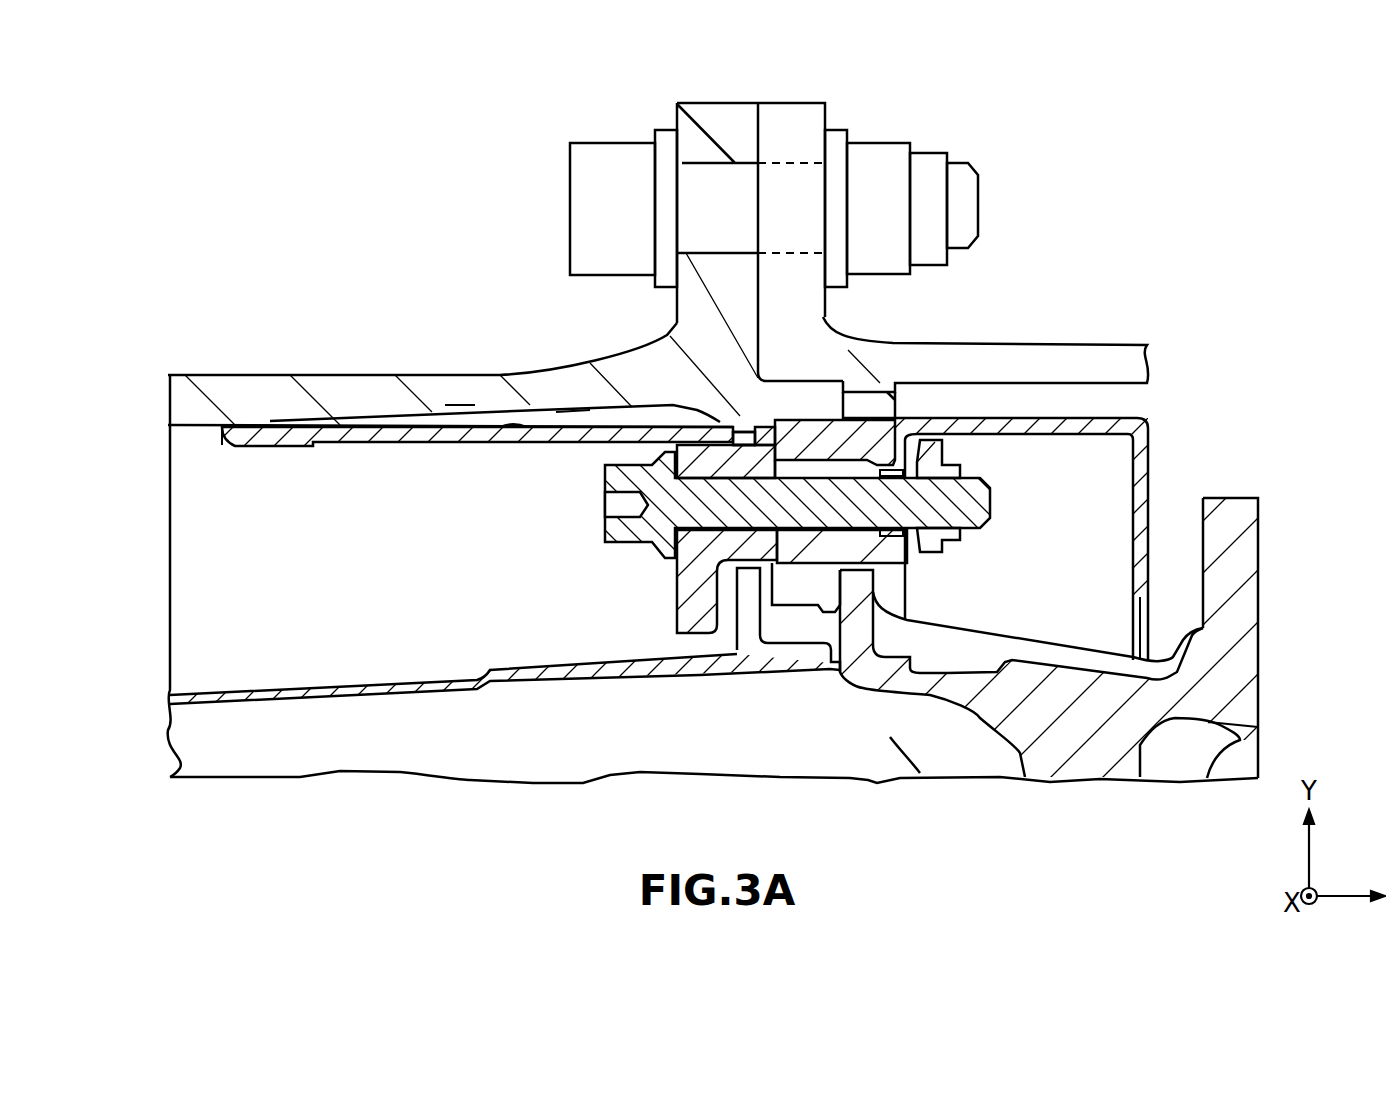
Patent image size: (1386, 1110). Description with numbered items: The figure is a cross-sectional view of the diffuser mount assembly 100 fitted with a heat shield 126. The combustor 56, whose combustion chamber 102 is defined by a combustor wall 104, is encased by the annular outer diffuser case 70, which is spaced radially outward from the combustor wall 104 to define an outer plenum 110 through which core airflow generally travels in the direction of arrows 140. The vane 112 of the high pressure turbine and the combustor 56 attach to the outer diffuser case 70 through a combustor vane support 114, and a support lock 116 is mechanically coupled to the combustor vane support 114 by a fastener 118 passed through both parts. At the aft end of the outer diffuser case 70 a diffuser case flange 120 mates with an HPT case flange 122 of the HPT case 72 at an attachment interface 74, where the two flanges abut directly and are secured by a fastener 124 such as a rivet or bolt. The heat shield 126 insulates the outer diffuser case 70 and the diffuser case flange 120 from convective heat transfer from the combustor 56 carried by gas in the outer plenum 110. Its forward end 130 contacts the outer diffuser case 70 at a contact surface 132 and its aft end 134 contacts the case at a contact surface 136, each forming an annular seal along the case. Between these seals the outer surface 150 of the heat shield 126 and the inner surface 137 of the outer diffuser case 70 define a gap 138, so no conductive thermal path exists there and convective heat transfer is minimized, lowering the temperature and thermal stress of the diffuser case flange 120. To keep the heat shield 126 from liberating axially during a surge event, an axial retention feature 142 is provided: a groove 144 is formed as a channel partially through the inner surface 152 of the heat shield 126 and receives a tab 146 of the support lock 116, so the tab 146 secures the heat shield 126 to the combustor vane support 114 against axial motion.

The diffuser mount assembly 100 is at (255, 182).
The combustion chamber 102 is at (745, 766).
The combustor wall 104 is at (145, 722).
The outer plenum 110 is at (300, 576).
The vane 112 is at (1100, 763).
The combustor vane support 114 is at (1140, 470).
The support lock 116 is at (690, 605).
The fastener 118 is at (985, 505).
The diffuser case flange 120 is at (698, 125).
The HPT case flange 122 is at (802, 118).
The fastener 124 is at (568, 165).
The heat shield 126 is at (345, 435).
The forward end 130 is at (225, 432).
The contact surface 132 is at (270, 421).
The aft end 134 is at (778, 420).
The contact surface 136 is at (790, 422).
The inner surface 137 is at (460, 406).
The gap 138 is at (570, 420).
The arrows 140 is at (288, 512).
The axial retention feature 142 is at (713, 415).
The groove 144 is at (749, 414).
The tab 146 is at (740, 458).
The outer surface 150 is at (517, 423).
The inner surface 152 is at (568, 445).
The combustor 56 is at (280, 765).
The outer diffuser case 70 is at (230, 388).
The HPT case 72 is at (1097, 358).
The attachment interface 74 is at (751, 74).